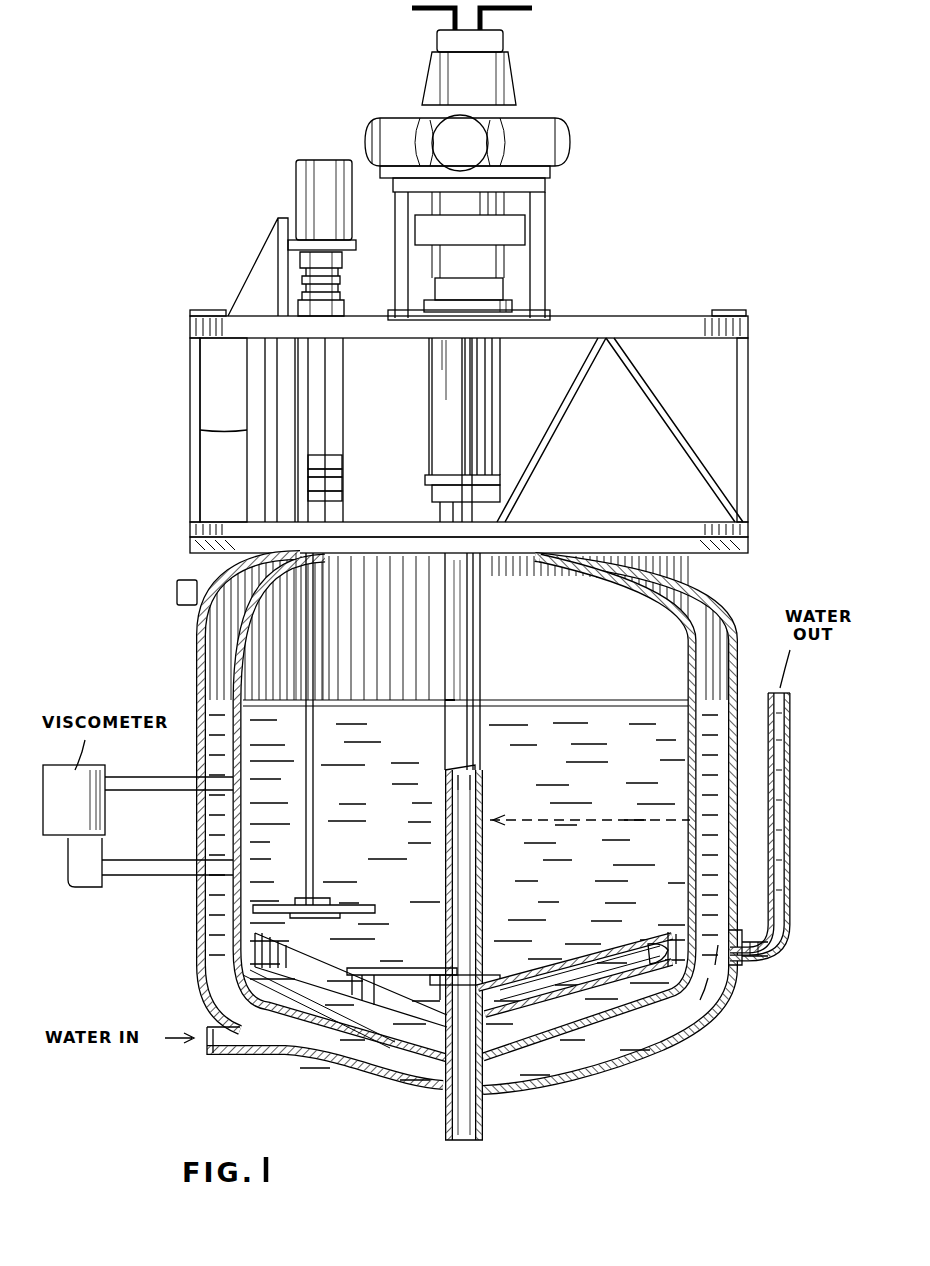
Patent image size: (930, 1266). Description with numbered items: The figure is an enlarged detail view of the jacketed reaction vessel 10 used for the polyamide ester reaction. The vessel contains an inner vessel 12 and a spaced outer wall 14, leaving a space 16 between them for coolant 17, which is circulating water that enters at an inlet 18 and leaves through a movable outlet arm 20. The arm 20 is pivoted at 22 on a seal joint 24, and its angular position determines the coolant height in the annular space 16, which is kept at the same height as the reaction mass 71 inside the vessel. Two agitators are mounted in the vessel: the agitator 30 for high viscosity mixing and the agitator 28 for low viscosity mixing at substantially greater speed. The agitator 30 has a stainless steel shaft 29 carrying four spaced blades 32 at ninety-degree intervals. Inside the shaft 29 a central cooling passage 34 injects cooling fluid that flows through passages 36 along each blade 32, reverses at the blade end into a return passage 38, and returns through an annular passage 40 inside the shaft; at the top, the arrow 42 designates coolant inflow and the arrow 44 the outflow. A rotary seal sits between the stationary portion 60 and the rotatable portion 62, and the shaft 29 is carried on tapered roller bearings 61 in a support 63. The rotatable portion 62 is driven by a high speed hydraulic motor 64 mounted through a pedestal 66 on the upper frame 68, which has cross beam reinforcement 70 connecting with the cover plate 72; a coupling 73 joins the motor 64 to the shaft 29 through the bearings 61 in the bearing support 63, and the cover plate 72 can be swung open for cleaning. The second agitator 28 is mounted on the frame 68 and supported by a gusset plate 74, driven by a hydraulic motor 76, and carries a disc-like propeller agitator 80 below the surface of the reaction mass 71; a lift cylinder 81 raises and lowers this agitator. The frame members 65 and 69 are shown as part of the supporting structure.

The reaction vessel 10 is at (758, 604).
The inner vessel 12 is at (196, 636).
The outer wall 14 is at (196, 735).
The space 16 is at (200, 822).
The coolant 17 is at (233, 686).
The inlet 18 is at (200, 1058).
The movable outlet arm 20 is at (792, 778).
The pivot 22 is at (765, 965).
The seal joint 24 is at (748, 975).
The agitator 28 is at (328, 660).
The shaft 29 is at (446, 695).
The agitator 30 is at (428, 725).
The blades 32 is at (345, 960).
The central cooling passage 34 is at (484, 782).
The passages 36 is at (520, 1000).
The return passage 38 is at (618, 942).
The annular passage 40 is at (484, 872).
The arrow 42 is at (592, 8).
The arrow 44 is at (395, 10).
The stationary portion 60 is at (517, 82).
The tapered roller bearings 61 is at (505, 290).
The rotatable portion 62 is at (428, 428).
The support 63 is at (514, 306).
The hydraulic motor 64 is at (572, 143).
The truss braces 65 is at (565, 410).
The pedestal 66 is at (536, 256).
The upper frame 68 is at (752, 326).
The side panel 69 is at (245, 430).
The cross beam reinforcement 70 is at (670, 418).
The reaction mass 71 is at (592, 718).
The cover plate 72 is at (592, 530).
The coupling 73 is at (520, 230).
The gusset plate 74 is at (250, 270).
The hydraulic motor 76 is at (302, 168).
The propeller agitator 80 is at (362, 905).
The lift cylinder 81 is at (318, 500).